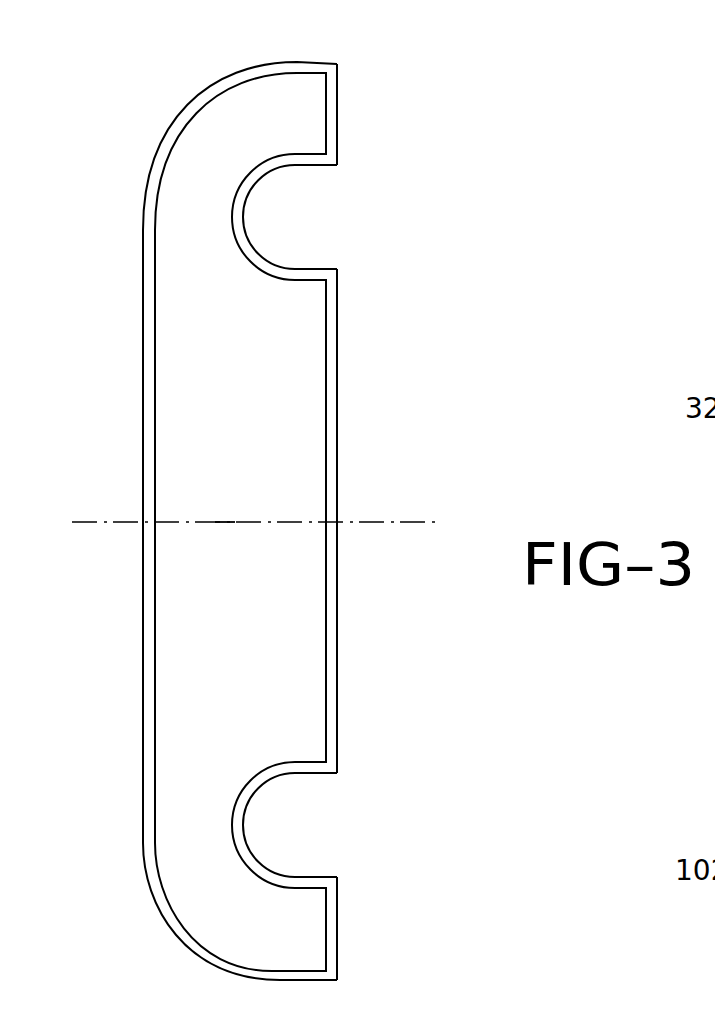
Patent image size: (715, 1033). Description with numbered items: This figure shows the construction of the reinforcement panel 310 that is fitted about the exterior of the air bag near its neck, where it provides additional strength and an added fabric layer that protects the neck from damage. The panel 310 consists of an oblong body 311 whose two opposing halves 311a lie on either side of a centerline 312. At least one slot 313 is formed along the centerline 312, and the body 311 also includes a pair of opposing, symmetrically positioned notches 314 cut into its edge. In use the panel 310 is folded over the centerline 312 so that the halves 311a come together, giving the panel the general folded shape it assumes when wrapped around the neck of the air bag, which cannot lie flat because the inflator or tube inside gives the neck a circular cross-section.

The reinforcement panel 310 is at (202, 372).
The oblong body 311 is at (170, 220).
The opposing halves 311a is at (282, 442).
The centerline 312 is at (112, 522).
The slot 313 is at (225, 523).
The notches 314 is at (270, 263).